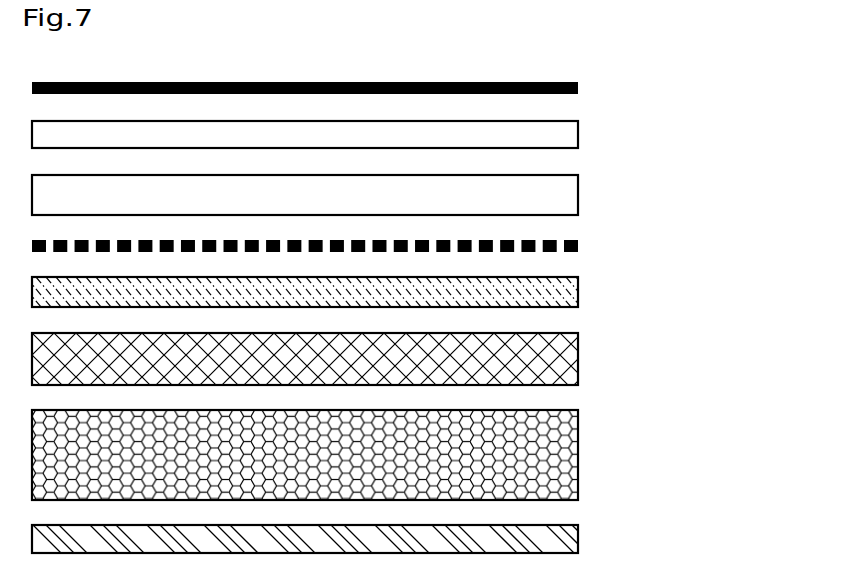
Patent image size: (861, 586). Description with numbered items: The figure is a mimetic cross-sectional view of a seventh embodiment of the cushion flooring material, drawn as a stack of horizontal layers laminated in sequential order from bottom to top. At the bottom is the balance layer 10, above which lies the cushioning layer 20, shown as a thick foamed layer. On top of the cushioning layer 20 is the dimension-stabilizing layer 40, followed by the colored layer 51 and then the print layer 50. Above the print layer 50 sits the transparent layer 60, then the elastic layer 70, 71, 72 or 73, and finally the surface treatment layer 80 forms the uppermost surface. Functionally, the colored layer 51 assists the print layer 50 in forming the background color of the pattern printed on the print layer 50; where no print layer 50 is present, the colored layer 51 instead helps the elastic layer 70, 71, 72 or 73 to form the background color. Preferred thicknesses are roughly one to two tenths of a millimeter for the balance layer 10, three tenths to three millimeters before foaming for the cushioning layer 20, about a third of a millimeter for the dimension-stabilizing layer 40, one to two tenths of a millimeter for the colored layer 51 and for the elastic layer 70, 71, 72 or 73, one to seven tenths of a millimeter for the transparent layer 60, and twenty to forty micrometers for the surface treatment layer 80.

The balance layer 10 is at (578, 537).
The cushioning layer 20 is at (578, 447).
The dimension-stabilizing layer 40 is at (578, 357).
The print layer 50 is at (578, 245).
The colored layer 51 is at (578, 292).
The transparent layer 60 is at (578, 195).
The elastic layer 70 is at (427, 131).
The elastic layer 71 is at (427, 131).
The elastic layer 72 is at (427, 131).
The elastic layer 73 is at (578, 132).
The surface treatment layer 80 is at (578, 85).